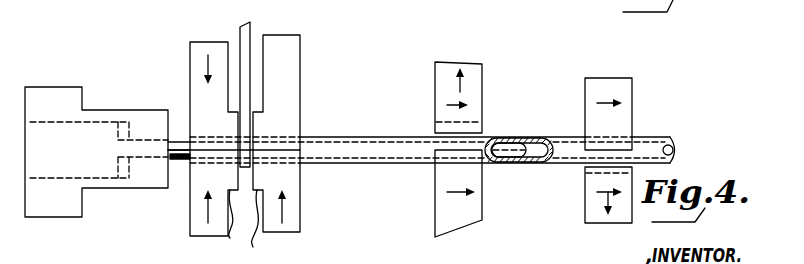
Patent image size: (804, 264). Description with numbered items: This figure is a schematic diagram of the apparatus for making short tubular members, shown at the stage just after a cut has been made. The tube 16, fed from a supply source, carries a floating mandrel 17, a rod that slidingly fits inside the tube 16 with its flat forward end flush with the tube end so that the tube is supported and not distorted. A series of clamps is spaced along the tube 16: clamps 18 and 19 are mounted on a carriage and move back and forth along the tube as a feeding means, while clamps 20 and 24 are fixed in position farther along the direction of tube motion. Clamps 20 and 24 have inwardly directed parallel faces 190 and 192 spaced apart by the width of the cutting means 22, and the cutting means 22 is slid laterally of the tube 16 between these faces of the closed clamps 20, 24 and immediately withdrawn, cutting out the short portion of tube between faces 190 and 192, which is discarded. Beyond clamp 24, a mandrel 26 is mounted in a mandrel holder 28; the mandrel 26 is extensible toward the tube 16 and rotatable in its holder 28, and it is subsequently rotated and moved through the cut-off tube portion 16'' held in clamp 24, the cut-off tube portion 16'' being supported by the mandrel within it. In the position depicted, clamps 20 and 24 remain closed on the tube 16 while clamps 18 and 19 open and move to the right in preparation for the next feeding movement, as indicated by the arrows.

The tube 16 is at (427, 132).
The key on shaft end 16'' is at (165, 189).
The floating mandrel 17 is at (507, 147).
The clamp 18 is at (632, 80).
The clamp 19 is at (478, 80).
The clamp 20 is at (315, 43).
The cutting means 22 is at (253, 25).
The clamp 24 is at (190, 57).
The mandrel 26 is at (178, 140).
The mandrel holder 28 is at (67, 86).
The parallel face 190 is at (273, 227).
The parallel face 192 is at (226, 227).